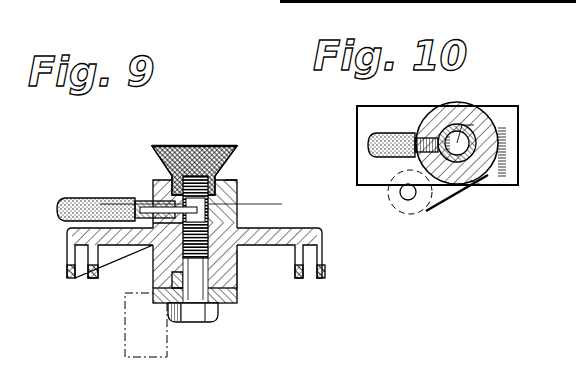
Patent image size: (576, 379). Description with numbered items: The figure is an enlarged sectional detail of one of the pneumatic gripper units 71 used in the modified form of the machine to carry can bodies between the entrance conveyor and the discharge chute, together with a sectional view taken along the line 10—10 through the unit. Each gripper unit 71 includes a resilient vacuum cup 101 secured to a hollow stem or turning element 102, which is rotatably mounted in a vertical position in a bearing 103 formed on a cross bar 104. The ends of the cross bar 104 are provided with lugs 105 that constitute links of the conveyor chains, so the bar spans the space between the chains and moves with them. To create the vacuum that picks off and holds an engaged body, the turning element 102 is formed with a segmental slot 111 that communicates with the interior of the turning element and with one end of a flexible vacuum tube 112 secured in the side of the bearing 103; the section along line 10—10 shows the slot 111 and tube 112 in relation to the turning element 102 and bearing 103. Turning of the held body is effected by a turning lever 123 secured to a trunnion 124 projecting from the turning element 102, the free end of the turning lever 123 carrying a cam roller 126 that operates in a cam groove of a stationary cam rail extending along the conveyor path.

In FIG. 9, the line 10— 10 is at (113, 197).
In FIG. 9, the pneumatic gripper unit 71 is at (237, 179).
In FIG. 9, the vacuum cup 101 is at (182, 145).
In FIG. 9, the turning element 102 is at (222, 225).
In FIG. 10, the turning element 102 is at (469, 129).
In FIG. 9, the bearing 103 is at (234, 256).
In FIG. 10, the bearing 103 is at (480, 186).
In FIG. 9, the cross bar 104 is at (297, 238).
In FIG. 10, the cross bar 104 is at (508, 137).
In FIG. 9, the lug 105 is at (92, 280).
In FIG. 9, the segmental slot 111 is at (156, 258).
In FIG. 10, the segmental slot 111 is at (437, 127).
In FIG. 9, the flexible vacuum tube 112 is at (67, 204).
In FIG. 10, the flexible vacuum tube 112 is at (385, 142).
In FIG. 9, the turning lever 123 is at (226, 297).
In FIG. 10, the turning lever 123 is at (442, 203).
In FIG. 9, the trunnion 124 is at (193, 310).
In FIG. 9, the cam roller 126 is at (124, 346).
In FIG. 10, the cam roller 126 is at (398, 207).